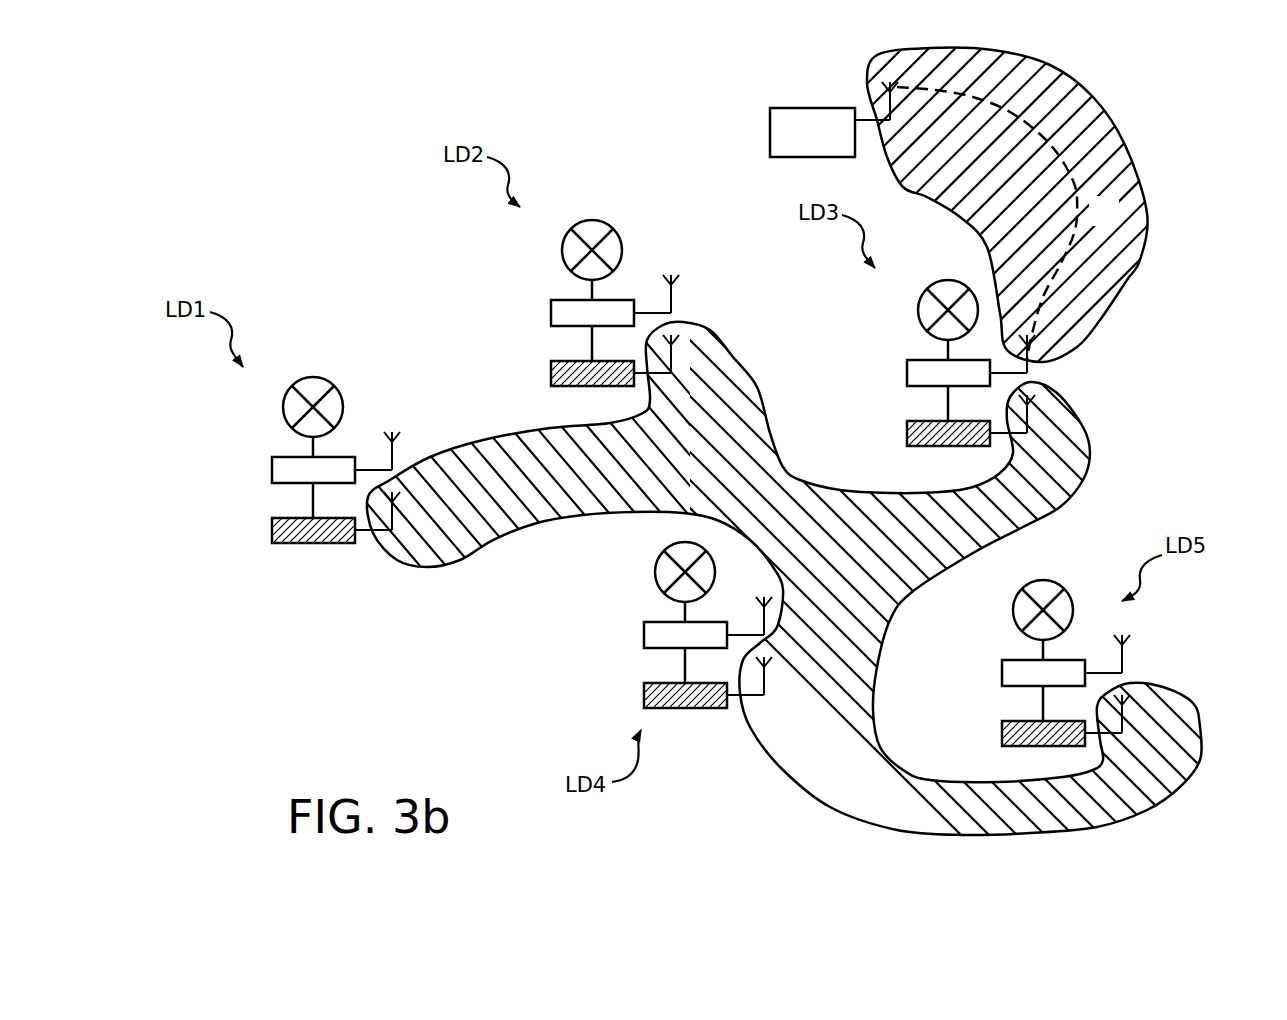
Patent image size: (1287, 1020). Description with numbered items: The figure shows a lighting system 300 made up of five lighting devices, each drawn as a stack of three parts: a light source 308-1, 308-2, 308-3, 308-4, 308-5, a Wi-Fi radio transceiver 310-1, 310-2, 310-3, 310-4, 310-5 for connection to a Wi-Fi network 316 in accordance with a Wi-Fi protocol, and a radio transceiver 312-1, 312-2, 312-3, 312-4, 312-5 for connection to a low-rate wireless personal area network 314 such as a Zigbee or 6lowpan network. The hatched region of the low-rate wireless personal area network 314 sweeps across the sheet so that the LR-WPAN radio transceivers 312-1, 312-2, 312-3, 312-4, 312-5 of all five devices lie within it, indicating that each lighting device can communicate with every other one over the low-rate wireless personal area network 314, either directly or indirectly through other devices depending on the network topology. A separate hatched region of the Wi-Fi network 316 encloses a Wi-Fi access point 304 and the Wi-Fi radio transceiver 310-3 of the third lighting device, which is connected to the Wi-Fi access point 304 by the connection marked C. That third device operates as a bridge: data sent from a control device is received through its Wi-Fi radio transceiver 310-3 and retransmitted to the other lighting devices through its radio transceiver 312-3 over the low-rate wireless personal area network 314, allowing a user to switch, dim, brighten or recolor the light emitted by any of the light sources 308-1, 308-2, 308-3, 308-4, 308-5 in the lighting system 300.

The lighting system 300 is at (327, 173).
The Wi-Fi access point 304 is at (828, 146).
The light source 308-1 is at (259, 407).
The light source 308-2 is at (538, 250).
The light source 308-3 is at (894, 310).
The light source 308-4 is at (631, 572).
The light source 308-5 is at (989, 610).
The Wi-Fi radio transceiver 310-1 is at (287, 461).
The Wi-Fi radio transceiver 310-2 is at (566, 304).
The Wi-Fi radio transceiver 310-3 is at (922, 364).
The Wi-Fi radio transceiver 310-4 is at (659, 626).
The Wi-Fi radio transceiver 310-5 is at (1017, 664).
The radio transceiver 312-1 is at (287, 521).
The radio transceiver 312-2 is at (566, 364).
The radio transceiver 312-3 is at (922, 424).
The radio transceiver 312-4 is at (659, 686).
The radio transceiver 312-5 is at (1017, 724).
The low-rate wireless personal area network 314 is at (1090, 447).
The Wi-Fi network 316 is at (1147, 222).